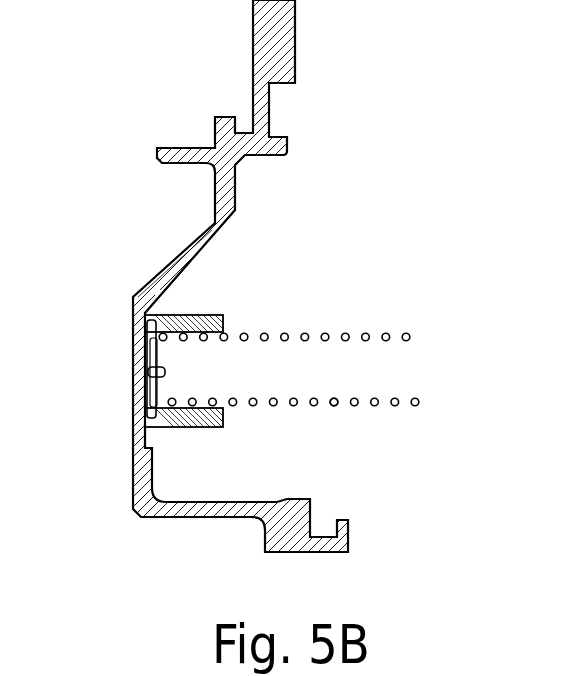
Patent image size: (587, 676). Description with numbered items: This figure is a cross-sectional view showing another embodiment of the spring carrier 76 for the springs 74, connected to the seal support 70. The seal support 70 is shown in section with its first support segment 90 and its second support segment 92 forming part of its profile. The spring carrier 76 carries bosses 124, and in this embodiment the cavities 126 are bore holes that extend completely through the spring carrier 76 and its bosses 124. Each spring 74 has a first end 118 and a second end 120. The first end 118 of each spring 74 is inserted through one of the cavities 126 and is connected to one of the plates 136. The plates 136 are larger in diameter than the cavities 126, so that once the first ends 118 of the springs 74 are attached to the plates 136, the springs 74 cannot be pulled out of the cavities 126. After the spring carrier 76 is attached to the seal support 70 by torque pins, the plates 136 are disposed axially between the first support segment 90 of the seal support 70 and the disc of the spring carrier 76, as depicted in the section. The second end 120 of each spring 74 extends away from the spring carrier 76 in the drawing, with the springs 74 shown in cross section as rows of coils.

The seal support 70 is at (177, 247).
The first support segment 90 is at (132, 331).
The second support segment 92 is at (180, 523).
The spring carrier 76 is at (203, 313).
The bosses 124 is at (239, 308).
The cavities 126 is at (193, 410).
The plates 136 is at (153, 407).
The first end 118 is at (166, 372).
The second end 120 is at (417, 399).
The spring 74 is at (335, 406).